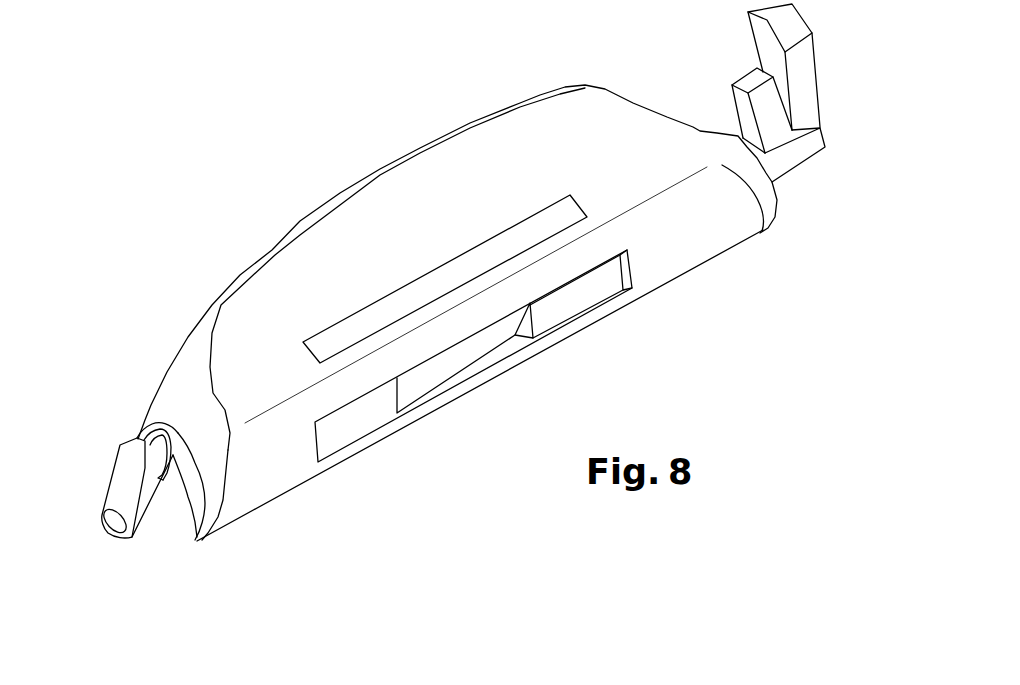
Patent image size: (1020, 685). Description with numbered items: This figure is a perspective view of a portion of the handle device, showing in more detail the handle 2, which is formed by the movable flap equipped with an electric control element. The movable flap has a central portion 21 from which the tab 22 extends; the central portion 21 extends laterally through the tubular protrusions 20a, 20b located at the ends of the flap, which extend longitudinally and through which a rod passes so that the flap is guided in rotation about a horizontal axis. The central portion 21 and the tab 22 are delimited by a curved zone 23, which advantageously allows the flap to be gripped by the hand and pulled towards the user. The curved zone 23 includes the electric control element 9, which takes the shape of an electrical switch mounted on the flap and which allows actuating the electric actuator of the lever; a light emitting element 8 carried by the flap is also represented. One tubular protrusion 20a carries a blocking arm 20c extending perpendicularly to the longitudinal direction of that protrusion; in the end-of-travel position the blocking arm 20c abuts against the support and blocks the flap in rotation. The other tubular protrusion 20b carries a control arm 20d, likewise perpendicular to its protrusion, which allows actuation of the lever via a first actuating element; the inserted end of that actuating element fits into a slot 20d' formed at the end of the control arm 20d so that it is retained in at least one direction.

The handle 2 is at (207, 194).
The light emitting element 8 is at (545, 315).
The electric control element 9 is at (540, 228).
The tubular protrusion 20a is at (807, 147).
The tubular protrusion 20b is at (115, 525).
The blocking arm 20c is at (802, 67).
The control arm 20d is at (90, 474).
The slot 20d' is at (235, 487).
The central portion 21 is at (392, 433).
The tab 22 is at (497, 160).
The curved zone 23 is at (263, 357).